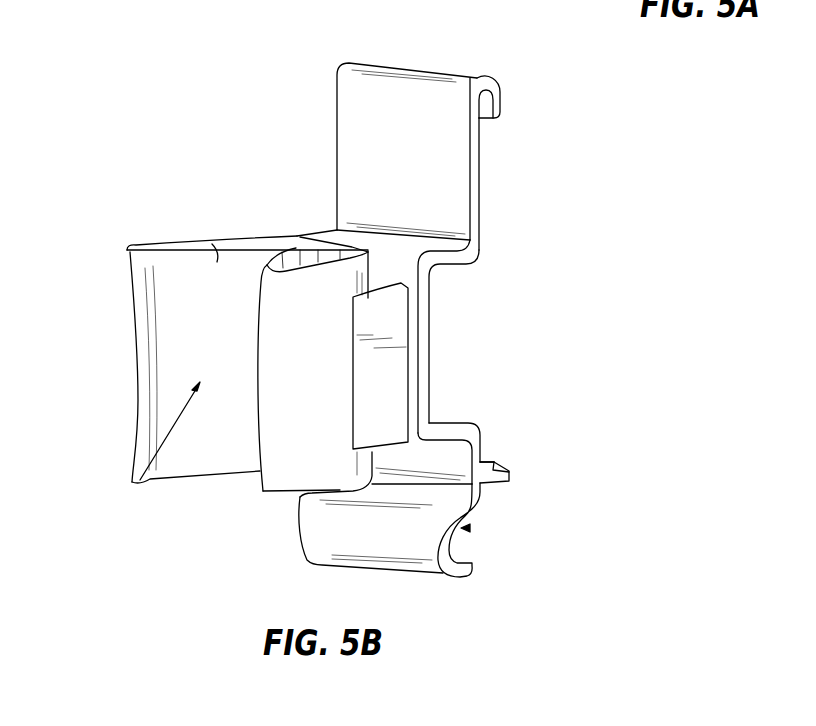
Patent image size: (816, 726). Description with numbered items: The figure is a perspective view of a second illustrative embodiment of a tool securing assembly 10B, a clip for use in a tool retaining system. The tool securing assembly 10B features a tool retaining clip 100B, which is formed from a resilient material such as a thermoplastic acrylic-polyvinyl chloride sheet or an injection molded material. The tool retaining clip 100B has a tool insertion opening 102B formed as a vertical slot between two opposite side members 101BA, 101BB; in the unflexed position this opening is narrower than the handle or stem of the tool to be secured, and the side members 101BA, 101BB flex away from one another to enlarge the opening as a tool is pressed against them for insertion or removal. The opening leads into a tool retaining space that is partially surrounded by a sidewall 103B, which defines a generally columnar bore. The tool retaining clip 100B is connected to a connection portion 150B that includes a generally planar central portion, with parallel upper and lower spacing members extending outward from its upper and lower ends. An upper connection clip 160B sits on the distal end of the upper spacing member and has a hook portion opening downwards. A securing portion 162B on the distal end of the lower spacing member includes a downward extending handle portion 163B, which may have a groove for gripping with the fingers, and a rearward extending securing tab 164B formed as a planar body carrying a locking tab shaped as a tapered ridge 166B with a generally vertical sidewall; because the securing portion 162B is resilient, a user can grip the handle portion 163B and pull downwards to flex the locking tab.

The tool securing assembly 10B is at (531, 268).
The tool retaining clip 100B is at (320, 388).
The first side member 101BA is at (140, 246).
The second side member 101BB is at (278, 250).
The tool insertion opening 102B is at (140, 480).
The sidewall 103B is at (213, 244).
The connection portion 150B is at (430, 338).
The upper connection clip 160B is at (355, 75).
The securing portion 162B is at (463, 528).
The handle portion 163B is at (373, 547).
The securing tab 164B is at (504, 480).
The tapered ridge 166B is at (494, 463).